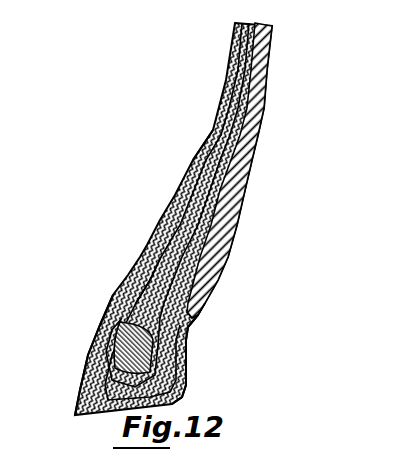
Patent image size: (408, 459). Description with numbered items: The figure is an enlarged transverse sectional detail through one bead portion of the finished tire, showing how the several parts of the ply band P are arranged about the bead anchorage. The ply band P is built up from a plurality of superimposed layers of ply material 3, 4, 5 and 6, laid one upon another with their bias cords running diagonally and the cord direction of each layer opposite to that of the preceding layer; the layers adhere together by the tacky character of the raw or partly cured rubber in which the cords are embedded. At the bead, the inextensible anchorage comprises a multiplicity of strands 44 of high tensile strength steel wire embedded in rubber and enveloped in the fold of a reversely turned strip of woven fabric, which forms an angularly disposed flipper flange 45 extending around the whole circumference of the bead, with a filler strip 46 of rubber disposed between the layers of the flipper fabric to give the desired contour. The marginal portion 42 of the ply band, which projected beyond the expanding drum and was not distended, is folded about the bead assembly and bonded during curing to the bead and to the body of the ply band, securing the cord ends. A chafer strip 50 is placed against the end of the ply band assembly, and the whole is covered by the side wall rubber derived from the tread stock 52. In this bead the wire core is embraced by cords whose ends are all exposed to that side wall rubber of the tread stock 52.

The tread stock 52 is at (263, 110).
The ply material layer 6 is at (235, 160).
The ply material layer 5 is at (232, 208).
The ply material layer 4 is at (225, 250).
The ply material layer 3 is at (200, 316).
The marginal portion of the ply band 42 is at (198, 328).
The chafer strip 50 is at (188, 378).
The strands of steel wire 44 is at (95, 349).
The filler strip 46 is at (130, 328).
The flipper flange 45 is at (157, 273).
The ply band P is at (193, 167).